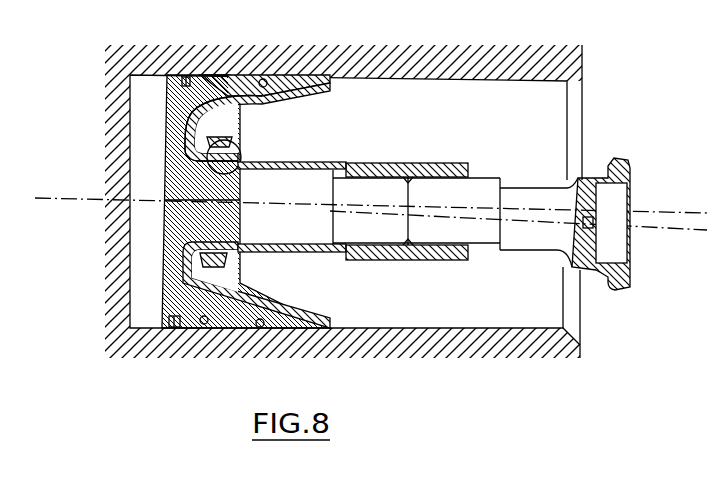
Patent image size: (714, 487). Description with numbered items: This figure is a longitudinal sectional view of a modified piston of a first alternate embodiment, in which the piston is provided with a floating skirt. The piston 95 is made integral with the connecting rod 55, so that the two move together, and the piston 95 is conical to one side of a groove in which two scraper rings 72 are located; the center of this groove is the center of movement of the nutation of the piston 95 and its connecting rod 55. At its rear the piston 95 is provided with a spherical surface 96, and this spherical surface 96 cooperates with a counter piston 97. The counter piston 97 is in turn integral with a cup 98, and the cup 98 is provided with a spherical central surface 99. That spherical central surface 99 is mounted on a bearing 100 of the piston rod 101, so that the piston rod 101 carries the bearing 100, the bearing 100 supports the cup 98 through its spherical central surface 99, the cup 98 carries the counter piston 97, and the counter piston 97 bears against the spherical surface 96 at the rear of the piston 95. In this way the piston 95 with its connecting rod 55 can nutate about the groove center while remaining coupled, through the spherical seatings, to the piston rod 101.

The connecting rod 55 is at (512, 187).
The scraper rings 72 is at (170, 325).
The piston 95 is at (166, 153).
The spherical surface 96 is at (204, 323).
The counter piston 97 is at (282, 328).
The cup 98 is at (232, 292).
The spherical central surface 99 is at (238, 158).
The bearing 100 is at (222, 157).
The piston rod 101 is at (283, 174).